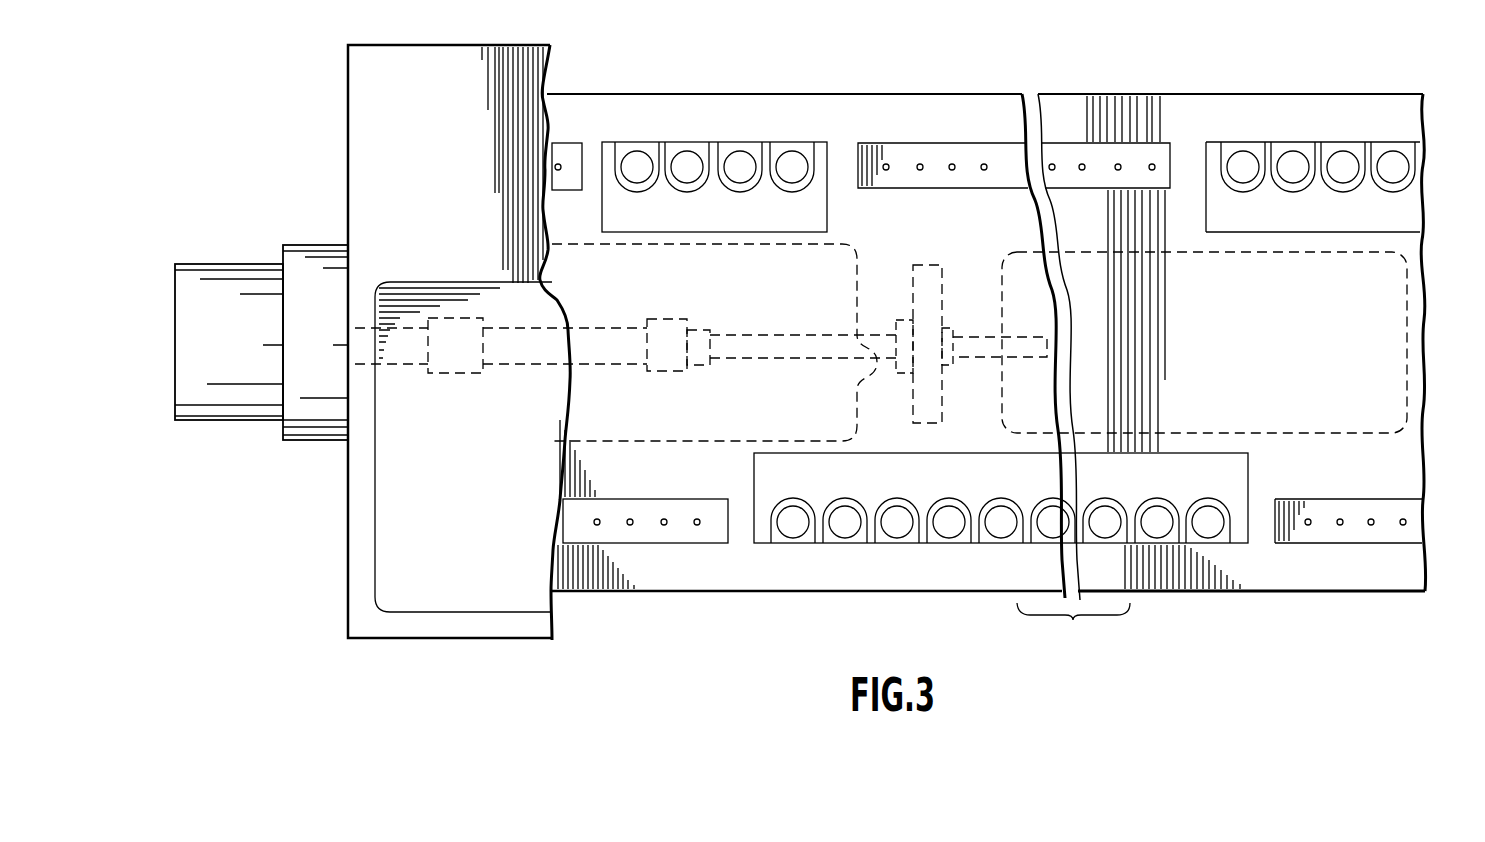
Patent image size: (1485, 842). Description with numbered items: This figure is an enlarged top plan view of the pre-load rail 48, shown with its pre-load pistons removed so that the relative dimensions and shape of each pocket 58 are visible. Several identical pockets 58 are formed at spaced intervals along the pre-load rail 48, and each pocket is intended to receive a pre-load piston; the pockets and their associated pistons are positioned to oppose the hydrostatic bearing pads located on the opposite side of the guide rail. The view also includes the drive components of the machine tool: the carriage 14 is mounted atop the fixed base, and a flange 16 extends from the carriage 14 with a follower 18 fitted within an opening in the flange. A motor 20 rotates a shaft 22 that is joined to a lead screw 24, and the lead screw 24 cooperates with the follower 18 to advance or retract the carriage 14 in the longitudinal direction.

The carriage 14 is at (527, 592).
The flange 16 is at (944, 411).
The follower 18 is at (946, 365).
The motor 20 is at (212, 392).
The shaft 22 is at (610, 345).
The lead screw 24 is at (975, 345).
The pre-load rail 48 is at (1055, 115).
The pocket 58 is at (688, 158).